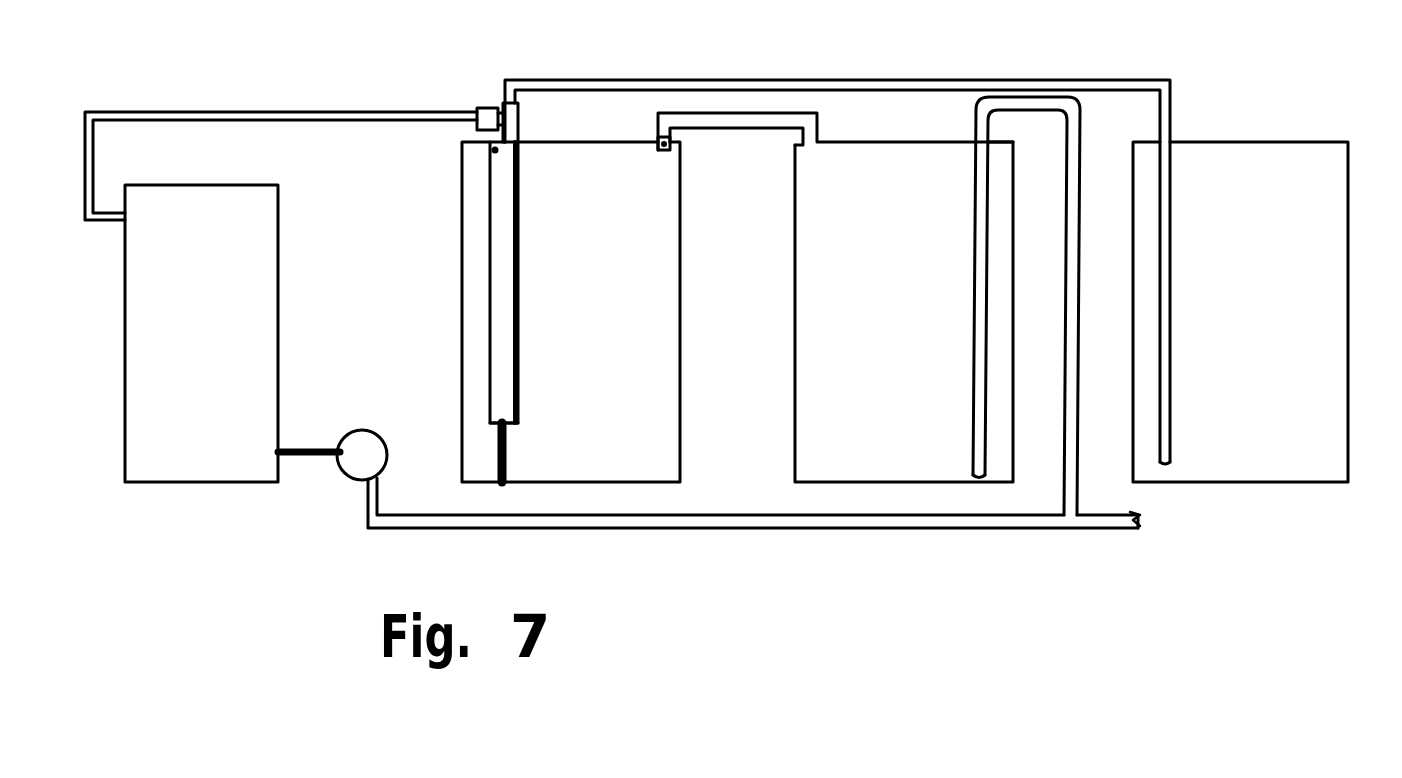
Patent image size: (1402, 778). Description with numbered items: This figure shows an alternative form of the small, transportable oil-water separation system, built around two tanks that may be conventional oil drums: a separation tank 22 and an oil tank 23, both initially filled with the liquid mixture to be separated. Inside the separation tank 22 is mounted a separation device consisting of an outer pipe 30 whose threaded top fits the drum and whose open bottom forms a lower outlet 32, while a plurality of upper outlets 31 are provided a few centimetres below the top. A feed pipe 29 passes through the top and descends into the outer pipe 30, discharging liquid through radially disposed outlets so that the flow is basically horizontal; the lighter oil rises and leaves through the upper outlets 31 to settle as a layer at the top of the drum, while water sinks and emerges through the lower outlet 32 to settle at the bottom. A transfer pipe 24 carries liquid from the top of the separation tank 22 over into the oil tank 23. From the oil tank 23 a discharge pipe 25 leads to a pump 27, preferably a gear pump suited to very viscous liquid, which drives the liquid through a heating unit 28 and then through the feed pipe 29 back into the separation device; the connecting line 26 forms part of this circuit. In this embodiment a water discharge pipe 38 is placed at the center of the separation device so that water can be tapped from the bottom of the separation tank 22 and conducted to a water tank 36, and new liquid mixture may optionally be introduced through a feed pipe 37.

The separation tank 22 is at (460, 318).
The oil tank 23 is at (795, 327).
The transfer pipe 24 is at (771, 120).
The discharge pipe 25 is at (975, 390).
The return pipe 26 is at (713, 530).
The pump 27 is at (358, 470).
The heating unit 28 is at (143, 452).
The feed pipe 29 is at (310, 112).
The outer pipe 30 is at (521, 277).
The upper outlets 31 is at (513, 145).
The lower outlet 32 is at (510, 432).
The water tank 36 is at (1240, 312).
The feed pipe 37 is at (1125, 528).
The water discharge pipe 38 is at (785, 78).